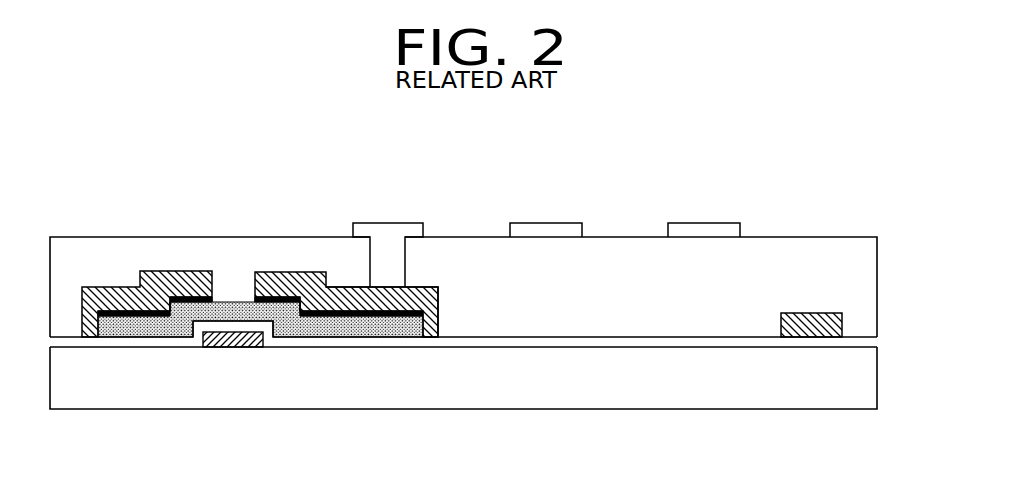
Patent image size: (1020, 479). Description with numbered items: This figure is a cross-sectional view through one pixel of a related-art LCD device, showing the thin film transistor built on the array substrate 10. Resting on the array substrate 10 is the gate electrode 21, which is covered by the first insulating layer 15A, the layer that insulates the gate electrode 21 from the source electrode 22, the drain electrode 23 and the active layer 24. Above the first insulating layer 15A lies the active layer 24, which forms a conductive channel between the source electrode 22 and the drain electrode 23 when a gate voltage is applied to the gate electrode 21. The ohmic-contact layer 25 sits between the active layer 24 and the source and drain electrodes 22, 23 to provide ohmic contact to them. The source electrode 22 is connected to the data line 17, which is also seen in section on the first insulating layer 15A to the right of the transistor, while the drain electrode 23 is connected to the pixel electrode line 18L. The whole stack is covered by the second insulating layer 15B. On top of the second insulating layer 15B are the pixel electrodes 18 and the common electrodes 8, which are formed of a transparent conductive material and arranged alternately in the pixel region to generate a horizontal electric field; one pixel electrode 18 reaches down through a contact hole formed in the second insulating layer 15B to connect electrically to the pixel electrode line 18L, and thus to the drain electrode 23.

The array substrate 10 is at (877, 377).
The first insulating layer 15A is at (877, 343).
The second insulating layer 15B is at (877, 282).
The gate electrode 21 is at (233, 348).
The active layer 24 is at (325, 333).
The ohmic-contact layer 25 is at (380, 320).
The source electrode 22 is at (187, 278).
The drain electrode 23 is at (280, 276).
The pixel electrode line 18L is at (434, 288).
The pixel electrode 18 is at (388, 230).
The common electrode 8 is at (706, 230).
The data line 17 is at (814, 333).